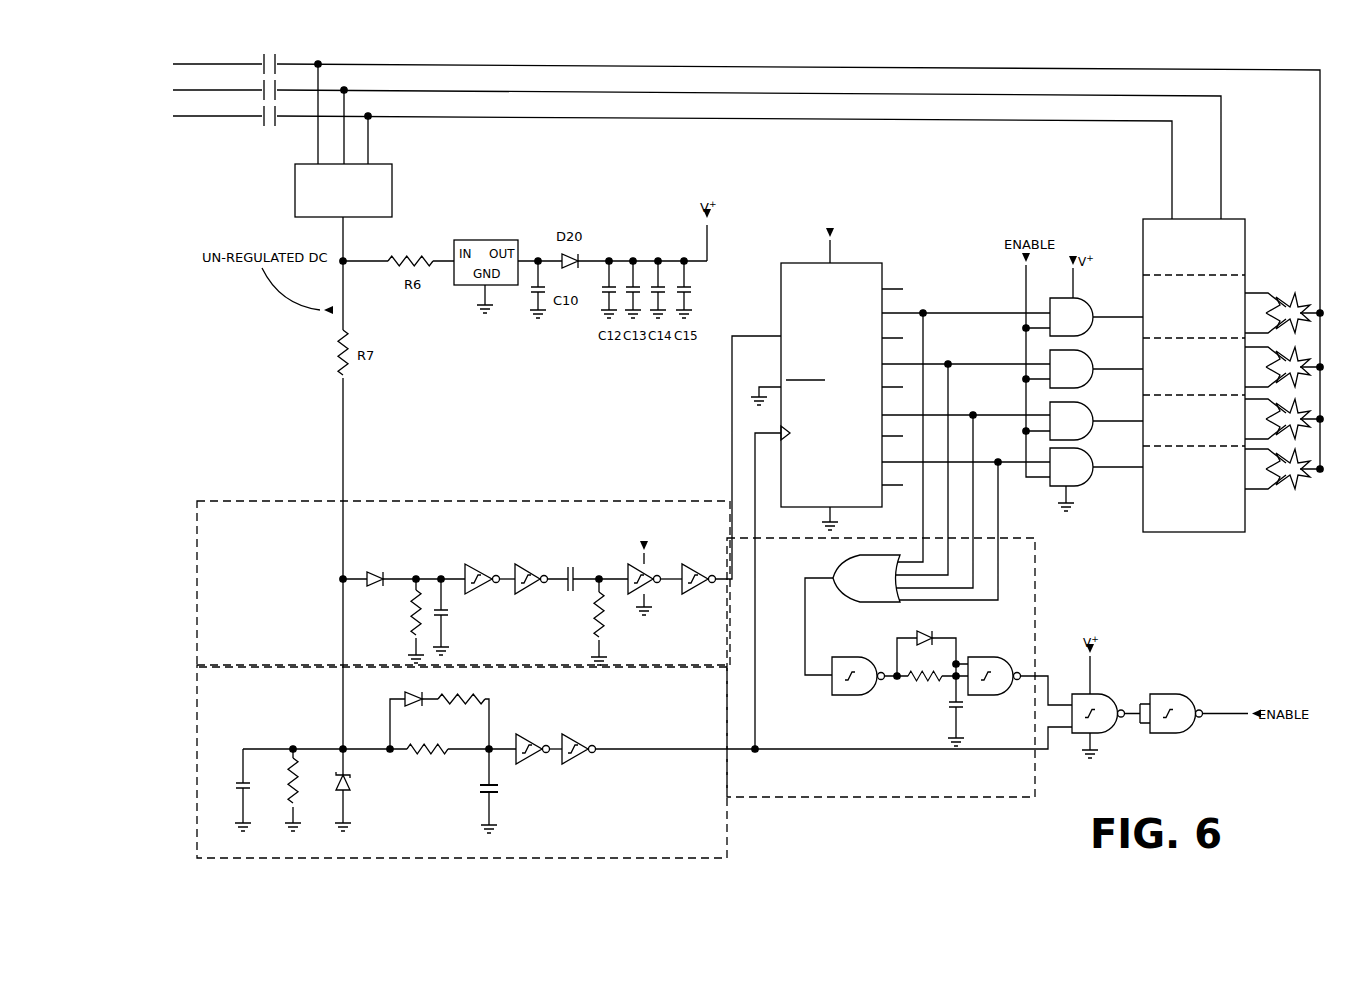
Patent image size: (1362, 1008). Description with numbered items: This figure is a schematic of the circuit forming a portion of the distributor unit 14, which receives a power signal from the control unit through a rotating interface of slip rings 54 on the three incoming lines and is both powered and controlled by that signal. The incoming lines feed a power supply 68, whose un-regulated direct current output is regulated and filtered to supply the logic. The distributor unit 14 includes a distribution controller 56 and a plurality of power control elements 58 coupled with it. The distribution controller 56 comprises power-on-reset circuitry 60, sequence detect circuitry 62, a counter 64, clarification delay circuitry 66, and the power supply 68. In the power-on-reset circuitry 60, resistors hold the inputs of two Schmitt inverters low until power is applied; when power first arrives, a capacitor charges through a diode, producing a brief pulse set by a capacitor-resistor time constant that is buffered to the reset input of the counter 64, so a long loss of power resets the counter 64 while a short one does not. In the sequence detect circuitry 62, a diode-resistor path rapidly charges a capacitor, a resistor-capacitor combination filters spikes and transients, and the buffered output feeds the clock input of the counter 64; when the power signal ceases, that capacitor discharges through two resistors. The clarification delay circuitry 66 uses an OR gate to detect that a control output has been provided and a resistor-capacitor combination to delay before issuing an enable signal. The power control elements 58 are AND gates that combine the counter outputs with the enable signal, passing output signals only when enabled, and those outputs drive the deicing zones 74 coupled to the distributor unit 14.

The distributor unit 14 is at (446, 49).
The slip rings 54 is at (271, 46).
The power supply 68 is at (385, 183).
The distribution controller 56 is at (657, 417).
The power-on-reset circuitry 60 is at (566, 514).
The counter 64 is at (857, 254).
The power control elements 58 is at (1154, 211).
The deicing zones 74 is at (1298, 308).
The clarification delay circuitry 66 is at (950, 783).
The sequence detect circuitry 62 is at (399, 826).